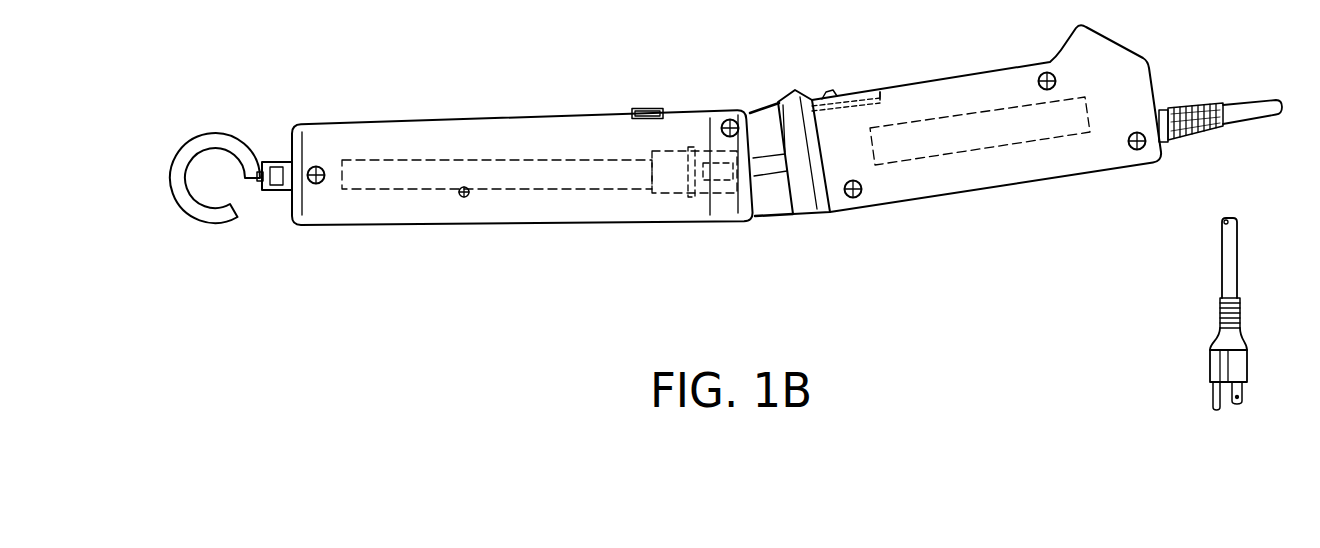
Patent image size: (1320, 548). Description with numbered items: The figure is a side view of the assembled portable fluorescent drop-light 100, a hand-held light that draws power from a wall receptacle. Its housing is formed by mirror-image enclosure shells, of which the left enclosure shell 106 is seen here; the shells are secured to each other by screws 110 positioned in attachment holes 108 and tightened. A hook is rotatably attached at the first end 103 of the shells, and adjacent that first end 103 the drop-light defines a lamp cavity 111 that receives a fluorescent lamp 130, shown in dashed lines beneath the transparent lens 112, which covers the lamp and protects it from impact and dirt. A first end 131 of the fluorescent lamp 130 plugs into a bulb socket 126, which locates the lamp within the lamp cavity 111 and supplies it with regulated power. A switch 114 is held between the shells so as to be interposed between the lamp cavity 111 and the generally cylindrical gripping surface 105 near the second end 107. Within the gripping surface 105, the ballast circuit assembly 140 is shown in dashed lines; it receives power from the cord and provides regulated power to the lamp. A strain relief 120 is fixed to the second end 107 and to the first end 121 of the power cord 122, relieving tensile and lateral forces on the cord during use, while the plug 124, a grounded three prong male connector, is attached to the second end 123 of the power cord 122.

The portable fluorescent drop-light 100 is at (204, 284).
The first end 103 is at (294, 124).
The gripping surface 105 is at (910, 110).
The left enclosure shell 106 is at (1027, 180).
The second end 107 is at (1152, 34).
The attachment holes 108 is at (1139, 151).
The screws 110 is at (853, 199).
The lamp cavity 111 is at (582, 130).
The lens 112 is at (388, 138).
The switch 114 is at (829, 91).
The strain relief 120 is at (1208, 128).
The first end of the power cord 121 is at (1249, 102).
The power cord 122 is at (1227, 256).
The second end of the power cord 123 is at (1242, 303).
The plug 124 is at (1215, 368).
The bulb socket 126 is at (723, 190).
The fluorescent lamp 130 is at (408, 180).
The first end of the fluorescent lamps 131 is at (660, 148).
The ballast circuit assembly 140 is at (960, 170).